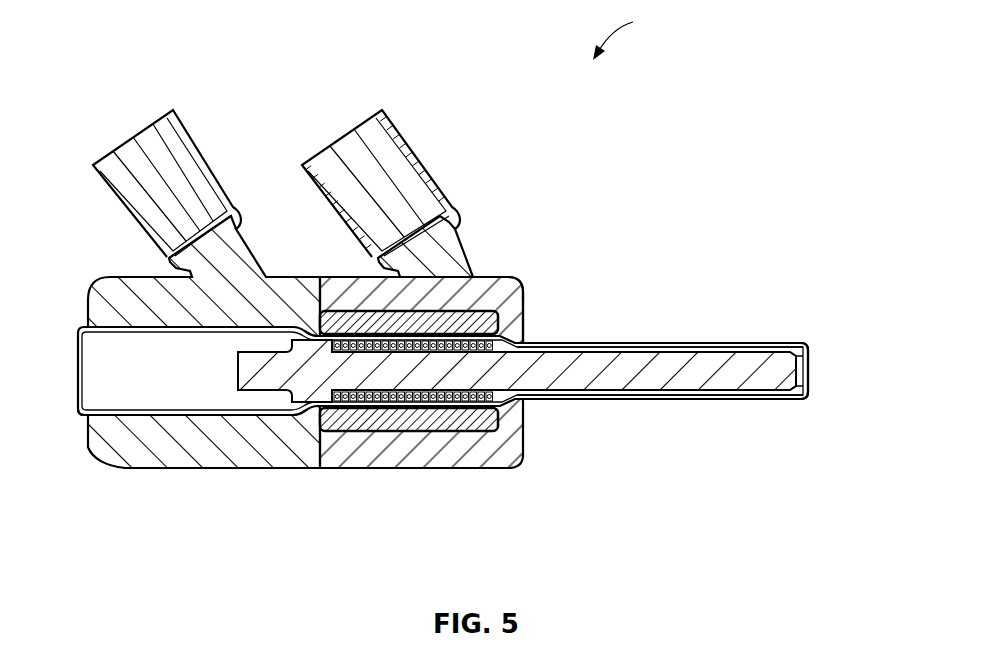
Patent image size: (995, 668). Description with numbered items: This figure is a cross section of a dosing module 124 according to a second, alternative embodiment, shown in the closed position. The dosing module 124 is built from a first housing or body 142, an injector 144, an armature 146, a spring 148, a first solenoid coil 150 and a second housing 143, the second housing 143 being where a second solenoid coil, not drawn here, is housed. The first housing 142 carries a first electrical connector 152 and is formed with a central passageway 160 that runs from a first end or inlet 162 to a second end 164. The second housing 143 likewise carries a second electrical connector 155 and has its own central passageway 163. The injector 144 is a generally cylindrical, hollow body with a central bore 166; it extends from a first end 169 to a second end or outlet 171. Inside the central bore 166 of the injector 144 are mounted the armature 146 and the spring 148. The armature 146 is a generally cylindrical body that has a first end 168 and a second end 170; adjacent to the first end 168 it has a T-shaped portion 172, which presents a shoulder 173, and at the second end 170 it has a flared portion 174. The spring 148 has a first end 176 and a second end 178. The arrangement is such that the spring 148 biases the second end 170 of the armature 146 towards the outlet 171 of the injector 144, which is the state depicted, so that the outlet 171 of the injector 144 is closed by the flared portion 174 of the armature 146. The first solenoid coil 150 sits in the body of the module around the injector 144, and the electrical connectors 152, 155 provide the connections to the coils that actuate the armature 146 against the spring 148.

The dosing module 124 is at (631, 34).
The first housing 142 is at (148, 437).
The second housing 143 is at (506, 289).
The injector 144 is at (640, 344).
The armature 146 is at (723, 365).
The spring 148 is at (437, 396).
The first solenoid coil 150 is at (400, 440).
The first electrical connector 152 is at (184, 138).
The second electrical connector 155 is at (390, 138).
The central passageway 160 is at (118, 397).
The inlet 162 is at (80, 411).
The central passageway 163 is at (518, 308).
The second end 164 is at (340, 344).
The central bore 166 is at (577, 348).
The first end 168 is at (250, 386).
The first end 169 is at (83, 320).
The second end 170 is at (778, 366).
The outlet 171 is at (803, 388).
The T-shaped portion 172 is at (308, 400).
The shoulder 173 is at (323, 452).
The flared portion 174 is at (803, 355).
The first end 176 is at (346, 322).
The second end 178 is at (502, 436).